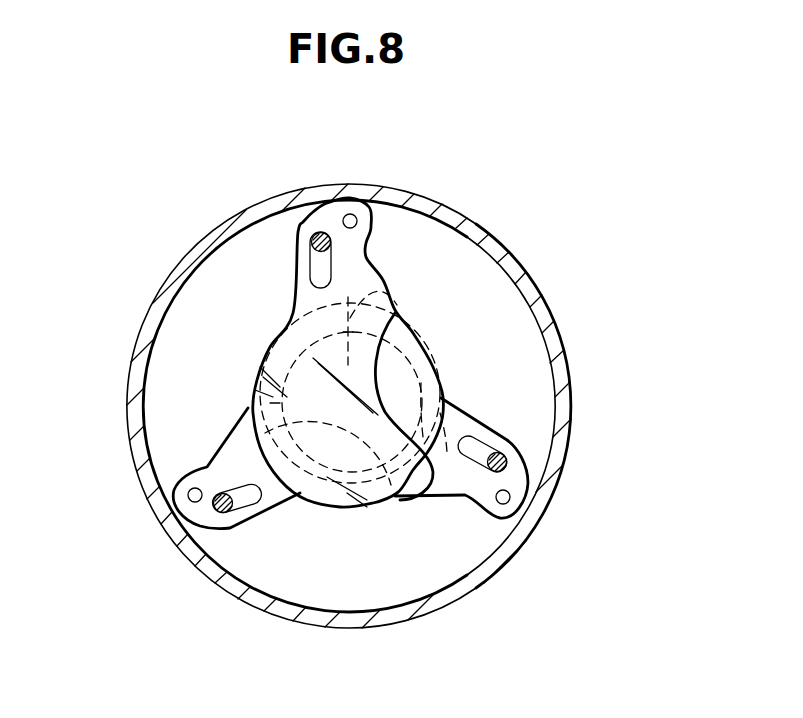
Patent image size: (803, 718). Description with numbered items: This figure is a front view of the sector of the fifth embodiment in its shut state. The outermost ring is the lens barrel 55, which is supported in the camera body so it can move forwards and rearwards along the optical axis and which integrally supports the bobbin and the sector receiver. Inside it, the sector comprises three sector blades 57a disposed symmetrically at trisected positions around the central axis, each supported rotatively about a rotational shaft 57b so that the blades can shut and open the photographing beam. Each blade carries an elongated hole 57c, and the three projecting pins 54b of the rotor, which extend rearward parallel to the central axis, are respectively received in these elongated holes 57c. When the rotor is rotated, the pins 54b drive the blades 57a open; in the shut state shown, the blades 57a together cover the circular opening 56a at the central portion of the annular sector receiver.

The lens barrel 55 is at (502, 248).
The circular opening 56a is at (422, 383).
The sector blades 57a is at (302, 297).
The rotational shaft 57b is at (357, 218).
The elongated holes 57c is at (310, 260).
The projecting pins 54b is at (310, 243).